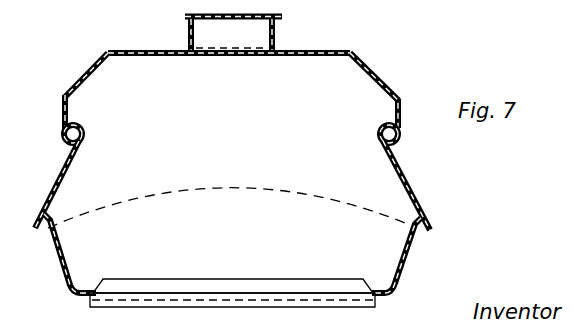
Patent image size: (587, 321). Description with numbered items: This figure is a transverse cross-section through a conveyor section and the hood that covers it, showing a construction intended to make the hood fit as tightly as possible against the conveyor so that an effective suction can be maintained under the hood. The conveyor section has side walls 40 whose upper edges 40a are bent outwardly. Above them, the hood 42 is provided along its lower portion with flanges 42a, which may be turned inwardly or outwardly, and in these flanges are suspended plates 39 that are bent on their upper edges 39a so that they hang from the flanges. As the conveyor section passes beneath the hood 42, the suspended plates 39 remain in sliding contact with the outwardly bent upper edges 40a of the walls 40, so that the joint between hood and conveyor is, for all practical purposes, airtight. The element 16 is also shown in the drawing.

The container body / upper wall 16 is at (356, 82).
The hood 42 is at (82, 84).
The flanges 42a is at (67, 145).
The upper edges 39a is at (79, 122).
The plates 39 is at (61, 179).
The upper edges 40a is at (53, 212).
The side walls 40 is at (62, 265).